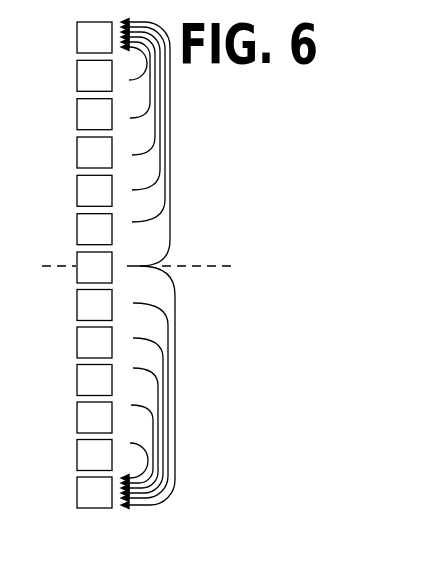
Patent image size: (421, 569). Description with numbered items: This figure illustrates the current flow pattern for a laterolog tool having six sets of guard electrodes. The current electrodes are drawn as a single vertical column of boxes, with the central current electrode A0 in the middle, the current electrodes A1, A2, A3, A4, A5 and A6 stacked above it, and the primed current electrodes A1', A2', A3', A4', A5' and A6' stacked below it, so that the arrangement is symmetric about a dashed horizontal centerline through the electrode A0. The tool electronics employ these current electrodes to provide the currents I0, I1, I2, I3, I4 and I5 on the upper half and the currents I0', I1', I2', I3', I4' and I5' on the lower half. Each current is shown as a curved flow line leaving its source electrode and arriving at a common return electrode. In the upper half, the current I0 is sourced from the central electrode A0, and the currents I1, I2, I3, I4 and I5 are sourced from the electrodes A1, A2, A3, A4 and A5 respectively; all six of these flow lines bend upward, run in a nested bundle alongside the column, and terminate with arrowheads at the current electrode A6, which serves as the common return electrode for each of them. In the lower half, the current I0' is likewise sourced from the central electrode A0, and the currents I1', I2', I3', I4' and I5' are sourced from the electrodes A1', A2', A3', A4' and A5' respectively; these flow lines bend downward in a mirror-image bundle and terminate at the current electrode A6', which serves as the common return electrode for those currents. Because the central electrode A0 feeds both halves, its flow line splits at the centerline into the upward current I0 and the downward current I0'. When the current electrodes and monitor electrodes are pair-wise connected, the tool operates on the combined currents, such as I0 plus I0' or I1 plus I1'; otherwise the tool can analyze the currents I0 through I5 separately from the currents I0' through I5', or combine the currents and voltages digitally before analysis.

The current electrode A0 is at (94, 267).
The current electrode A1 is at (94, 229).
The current electrode A2 is at (94, 190).
The current electrode A3 is at (94, 152).
The current electrode A4 is at (94, 114).
The current electrode A5 is at (94, 75).
The common return electrode A6 is at (94, 37).
The current electrode A1' is at (94, 304).
The current electrode A2' is at (94, 342).
The current electrode A3' is at (94, 379).
The current electrode A4' is at (94, 417).
The current electrode A5' is at (94, 454).
The common return electrode A6' is at (94, 492).
The current I0 is at (143, 143).
The current I1 is at (140, 128).
The current I2 is at (138, 114).
The current I3 is at (135, 99).
The current I4 is at (133, 84).
The current I5 is at (131, 68).
The current I0' is at (145, 386).
The current I1' is at (142, 399).
The current I2' is at (139, 414).
The current I3' is at (137, 428).
The current I4' is at (134, 444).
The current I5' is at (132, 460).